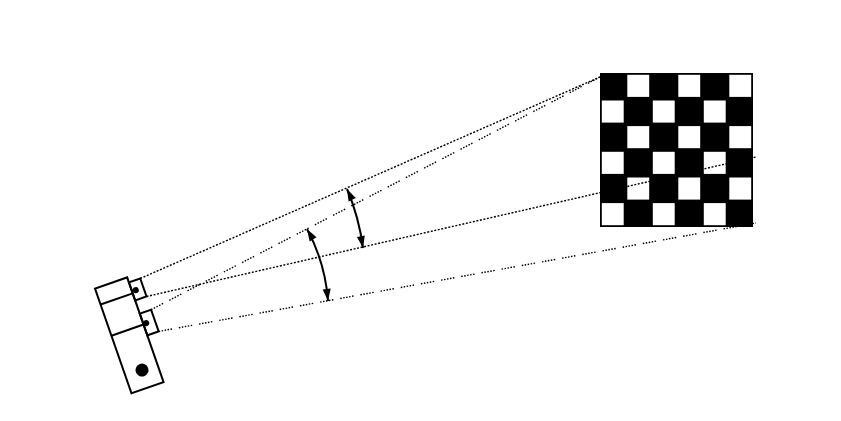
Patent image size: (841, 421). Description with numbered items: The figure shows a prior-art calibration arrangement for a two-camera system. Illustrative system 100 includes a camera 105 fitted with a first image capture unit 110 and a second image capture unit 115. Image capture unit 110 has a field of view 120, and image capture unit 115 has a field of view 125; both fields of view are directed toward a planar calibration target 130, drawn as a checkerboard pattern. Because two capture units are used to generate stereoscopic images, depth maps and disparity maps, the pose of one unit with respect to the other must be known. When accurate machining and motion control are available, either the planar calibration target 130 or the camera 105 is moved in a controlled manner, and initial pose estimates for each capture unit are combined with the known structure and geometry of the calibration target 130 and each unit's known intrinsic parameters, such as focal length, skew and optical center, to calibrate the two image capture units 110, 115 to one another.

The system 100 is at (117, 160).
The camera 105 is at (110, 284).
The first image capture unit 110 is at (101, 304).
The second image capture unit 115 is at (111, 336).
The field of view 120 is at (372, 218).
The field of view 125 is at (333, 265).
The planar calibration target 130 is at (674, 73).